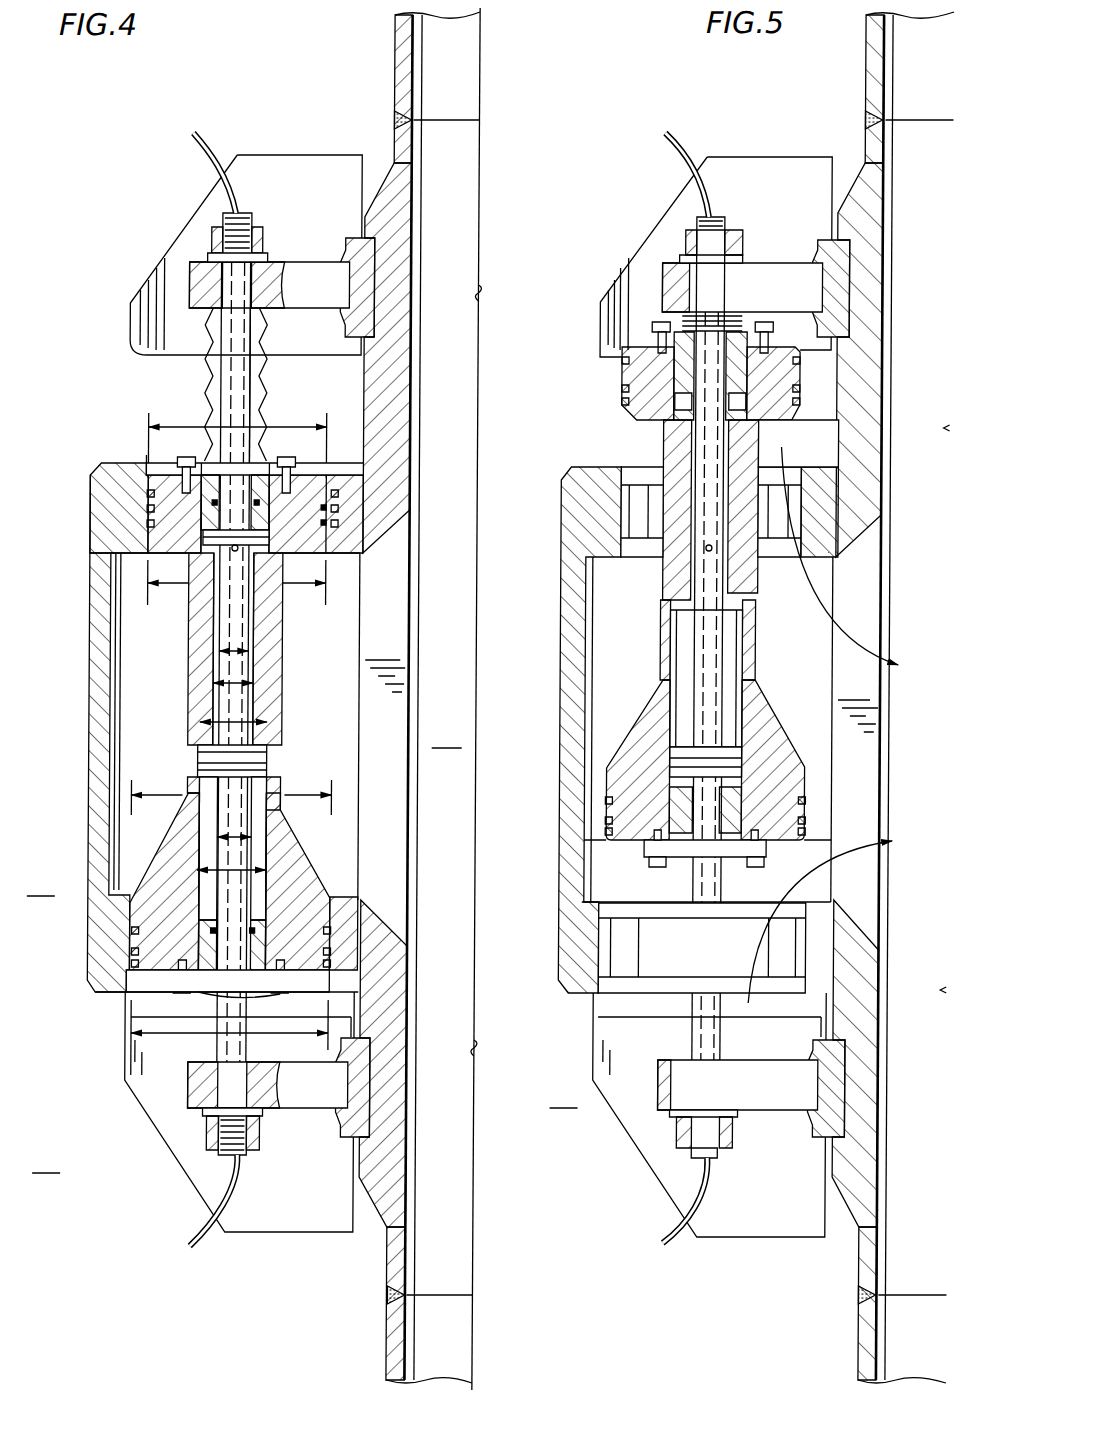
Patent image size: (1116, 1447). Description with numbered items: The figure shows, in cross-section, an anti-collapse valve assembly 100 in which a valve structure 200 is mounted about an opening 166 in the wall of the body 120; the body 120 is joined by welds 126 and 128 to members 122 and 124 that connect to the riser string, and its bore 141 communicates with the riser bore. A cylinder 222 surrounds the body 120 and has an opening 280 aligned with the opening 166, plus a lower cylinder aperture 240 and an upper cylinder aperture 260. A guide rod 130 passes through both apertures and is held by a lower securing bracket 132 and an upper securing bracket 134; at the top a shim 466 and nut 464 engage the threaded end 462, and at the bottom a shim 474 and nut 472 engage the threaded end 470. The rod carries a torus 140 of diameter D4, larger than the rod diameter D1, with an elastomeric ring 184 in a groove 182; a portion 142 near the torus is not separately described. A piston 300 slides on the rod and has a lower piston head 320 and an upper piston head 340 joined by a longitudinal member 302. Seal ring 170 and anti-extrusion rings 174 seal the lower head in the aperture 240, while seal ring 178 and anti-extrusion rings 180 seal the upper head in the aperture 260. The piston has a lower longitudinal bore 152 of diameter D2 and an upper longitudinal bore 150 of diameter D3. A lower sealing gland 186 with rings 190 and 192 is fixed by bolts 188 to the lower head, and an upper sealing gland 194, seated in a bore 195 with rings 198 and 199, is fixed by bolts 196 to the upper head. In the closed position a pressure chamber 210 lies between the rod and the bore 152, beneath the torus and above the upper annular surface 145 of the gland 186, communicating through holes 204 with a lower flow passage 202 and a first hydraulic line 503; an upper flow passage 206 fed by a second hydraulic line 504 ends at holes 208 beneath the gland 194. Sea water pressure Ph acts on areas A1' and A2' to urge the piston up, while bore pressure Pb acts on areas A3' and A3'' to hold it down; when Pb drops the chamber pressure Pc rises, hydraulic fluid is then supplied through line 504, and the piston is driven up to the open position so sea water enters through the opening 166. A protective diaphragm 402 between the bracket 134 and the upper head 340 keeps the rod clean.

In FIG. 4, the anti-collapse valve assembly 100 is at (493, 150).
In FIG. 5, the anti-collapse valve assembly 100 is at (840, 117).
In FIG. 4, the body 120 is at (392, 188).
In FIG. 4, the member 122 is at (394, 34).
In FIG. 4, the member 124 is at (393, 1376).
In FIG. 4, the weld 126 is at (392, 116).
In FIG. 4, the weld 128 is at (390, 1298).
In FIG. 4, the guide rod 130 is at (226, 655).
In FIG. 5, the guide rod 130 is at (712, 604).
In FIG. 4, the first or lower securing bracket 132 is at (316, 1107).
In FIG. 4, the second or upper securing bracket 134 is at (316, 300).
In FIG. 4, the torus 140 is at (200, 752).
In FIG. 5, the torus 140 is at (746, 745).
In FIG. 4, the bore 141 is at (452, 55).
In FIG. 4, the inner tube 142 is at (196, 752).
In FIG. 4, the upper annular surface 145 is at (206, 930).
In FIG. 4, the second or upper longitudinal bore 150 is at (361, 716).
In FIG. 4, the first or lower longitudinal bore 152 is at (286, 823).
In FIG. 5, the first or lower longitudinal bore 152 is at (738, 680).
In FIG. 4, the opening 166 is at (394, 664).
In FIG. 5, the opening 166 is at (858, 586).
In FIG. 4, the elastomeric seal ring 170 is at (136, 935).
In FIG. 4, the anti-extrusion metallic rings 174 is at (136, 975).
In FIG. 4, the elastomeric seal ring 178 is at (150, 464).
In FIG. 4, the anti-extrusion metallic rings 180 is at (142, 500).
In FIG. 4, the groove 182 is at (200, 778).
In FIG. 4, the elastomeric ring 184 is at (200, 762).
In FIG. 4, the first or lower sealing gland 186 is at (150, 998).
In FIG. 4, the bolts 188 is at (283, 986).
In FIG. 4, the elastomeric ring 190 is at (266, 941).
In FIG. 4, the elastomeric ring 192 is at (300, 946).
In FIG. 4, the second or upper sealing gland 194 is at (286, 478).
In FIG. 4, the bore 195 is at (300, 520).
In FIG. 4, the bolts 196 is at (305, 468).
In FIG. 4, the elastomeric ring 198 is at (270, 490).
In FIG. 4, the elastomeric ring 199 is at (325, 526).
In FIG. 4, the valve structure 200 is at (96, 343).
In FIG. 5, the valve structure 200 is at (556, 455).
In FIG. 4, the first or lower flow passage 202 is at (331, 1061).
In FIG. 4, the holes 204 is at (270, 772).
In FIG. 4, the second or upper flow passage 206 is at (226, 372).
In FIG. 4, the holes 208 is at (240, 543).
In FIG. 4, the pressure chamber 210 is at (212, 836).
In FIG. 4, the cylinder 222 is at (100, 694).
In FIG. 4, the first or lower cylinder aperture 240 is at (126, 1022).
In FIG. 5, the first or lower cylinder aperture 240 is at (617, 999).
In FIG. 4, the second or upper cylinder aperture 260 is at (150, 456).
In FIG. 5, the second or upper cylinder aperture 260 is at (626, 482).
In FIG. 4, the opening 280 is at (350, 626).
In FIG. 4, the piston 300 is at (156, 645).
In FIG. 5, the piston 300 is at (650, 643).
In FIG. 4, the longitudinal member 302 is at (186, 628).
In FIG. 4, the first or lower piston head 320 is at (150, 905).
In FIG. 5, the first or lower piston head 320 is at (640, 790).
In FIG. 4, the second or upper piston head 340 is at (166, 530).
In FIG. 5, the second or upper piston head 340 is at (640, 374).
In FIG. 4, the protective diaphragm 402 is at (252, 376).
In FIG. 5, the protective diaphragm 402 is at (655, 316).
In FIG. 4, the threaded end 462 is at (249, 212).
In FIG. 4, the upper lock nut 464 is at (258, 236).
In FIG. 4, the shim 466 is at (268, 257).
In FIG. 4, the threaded end 470 is at (212, 1146).
In FIG. 4, the nut 472 is at (259, 1118).
In FIG. 4, the shim 474 is at (215, 1124).
In FIG. 4, the first hydraulic line 503 is at (200, 1252).
In FIG. 5, the first hydraulic line 503 is at (683, 1252).
In FIG. 4, the second hydraulic line 504 is at (200, 131).
In FIG. 5, the second hydraulic line 504 is at (690, 131).
In FIG. 4, the annular area A1' is at (198, 1065).
In FIG. 4, the annular lateral area A2' is at (242, 430).
In FIG. 4, the effective lateral annular area A3' is at (300, 784).
In FIG. 4, the effective lateral annular area A3'' is at (240, 599).
In FIG. 4, the diameter of the guide rod D1 is at (252, 660).
In FIG. 4, the diameter of the first longitudinal bore D2 is at (272, 872).
In FIG. 4, the outer diameter of the second longitudinal bore D3 is at (258, 690).
In FIG. 4, the diameter of the torus D4 is at (272, 724).
In FIG. 4, the drilling fluid pressure Pb is at (447, 735).
In FIG. 4, the chamber pressure Pc is at (41, 883).
In FIG. 4, the sea water pressure head Ph is at (46, 1160).
In FIG. 5, the sea water pressure head Ph is at (564, 1095).